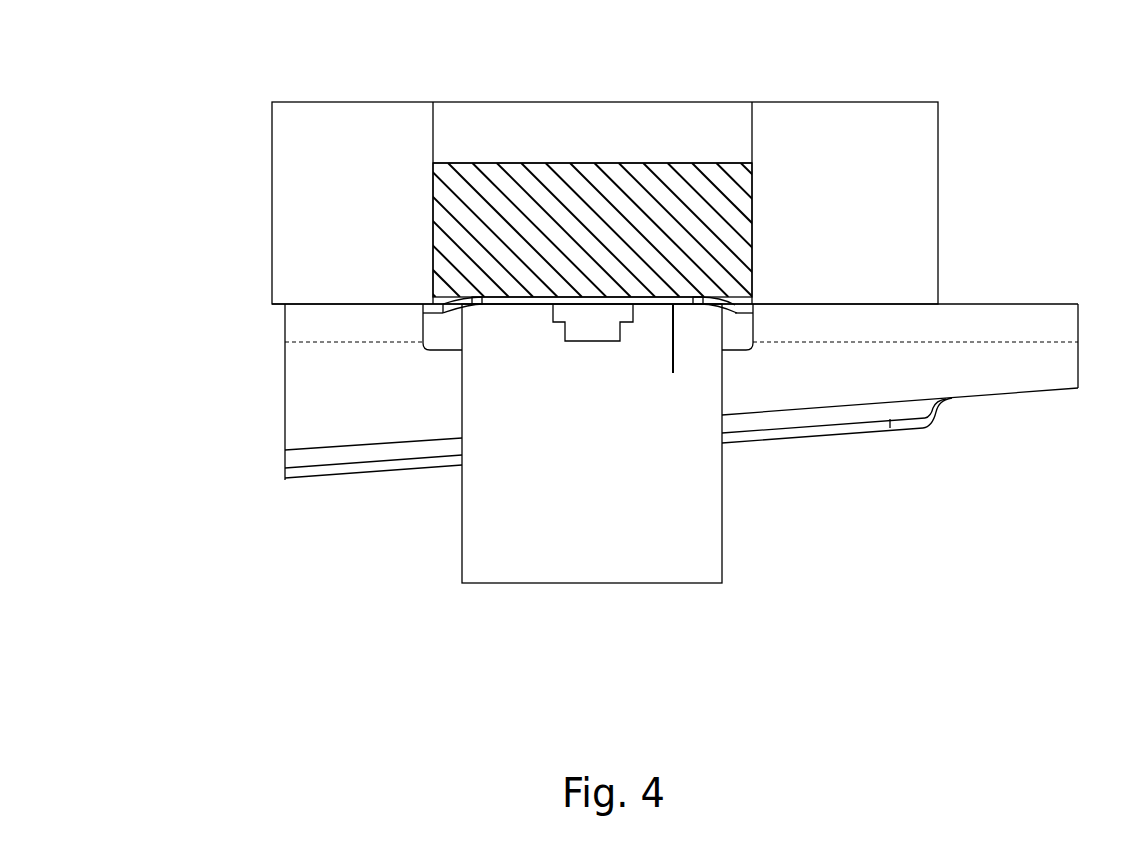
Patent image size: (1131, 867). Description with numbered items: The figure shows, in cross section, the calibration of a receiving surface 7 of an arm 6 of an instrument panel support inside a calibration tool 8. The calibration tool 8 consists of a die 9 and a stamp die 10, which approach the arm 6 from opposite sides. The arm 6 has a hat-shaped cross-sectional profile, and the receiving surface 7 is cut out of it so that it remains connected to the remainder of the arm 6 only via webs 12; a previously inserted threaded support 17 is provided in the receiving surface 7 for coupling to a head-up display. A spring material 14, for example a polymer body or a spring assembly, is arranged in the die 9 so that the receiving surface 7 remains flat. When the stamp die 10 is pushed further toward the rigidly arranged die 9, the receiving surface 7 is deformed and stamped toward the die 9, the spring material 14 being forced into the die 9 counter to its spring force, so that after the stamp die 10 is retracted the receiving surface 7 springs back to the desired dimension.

The calibration tool 8 is at (208, 99).
The die 9 is at (918, 232).
The spring material 14 is at (728, 188).
The arm 6 is at (1013, 367).
The stamp die 10 is at (707, 557).
The web 12 is at (444, 306).
The threaded support 17 is at (572, 341).
The receiving surface 7 is at (673, 373).